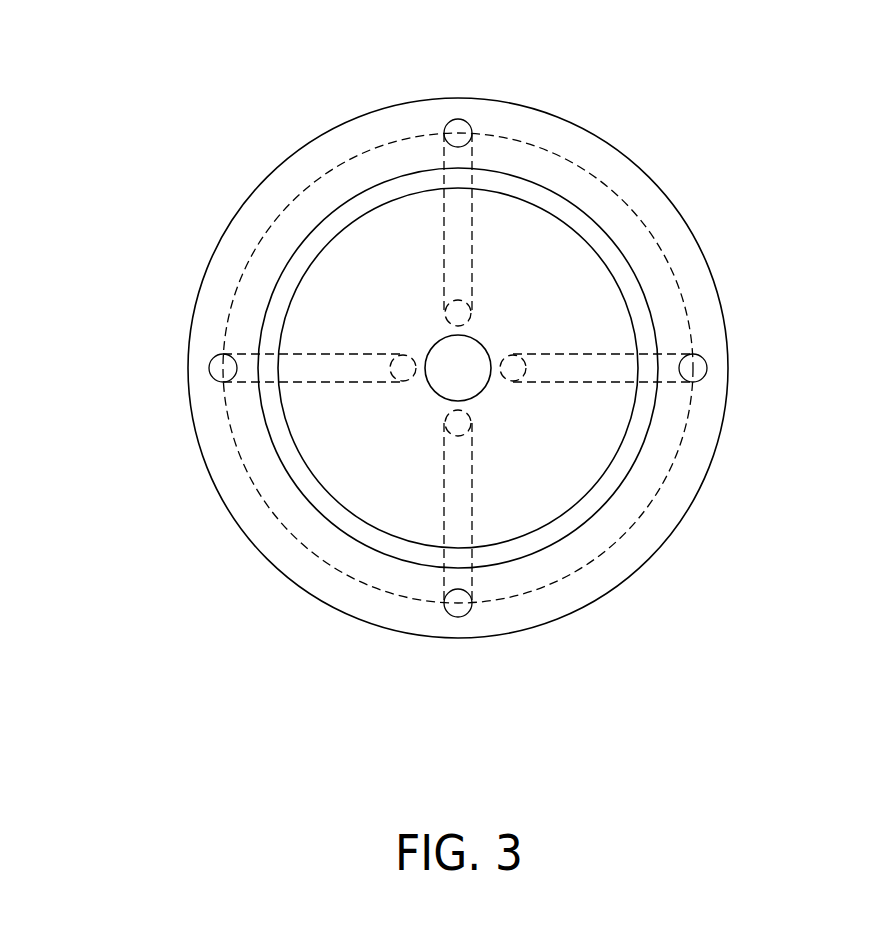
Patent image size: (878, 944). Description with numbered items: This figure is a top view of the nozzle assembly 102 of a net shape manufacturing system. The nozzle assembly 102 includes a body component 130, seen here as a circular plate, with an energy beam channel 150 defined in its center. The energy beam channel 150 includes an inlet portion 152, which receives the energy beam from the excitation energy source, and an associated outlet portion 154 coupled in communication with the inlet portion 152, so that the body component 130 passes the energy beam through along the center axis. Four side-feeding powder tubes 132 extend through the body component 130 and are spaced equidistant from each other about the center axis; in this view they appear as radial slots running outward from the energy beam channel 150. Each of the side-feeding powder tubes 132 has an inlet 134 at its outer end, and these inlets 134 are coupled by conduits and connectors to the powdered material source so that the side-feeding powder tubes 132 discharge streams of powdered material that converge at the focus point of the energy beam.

The nozzle assembly 102 is at (766, 109).
The body component 130 is at (580, 123).
The side-feeding powder tubes 132 is at (472, 193).
The inlets 134 is at (470, 122).
The energy beam channel 150 is at (312, 310).
The inlet portion 152 is at (353, 217).
The outlet portion 154 is at (474, 338).